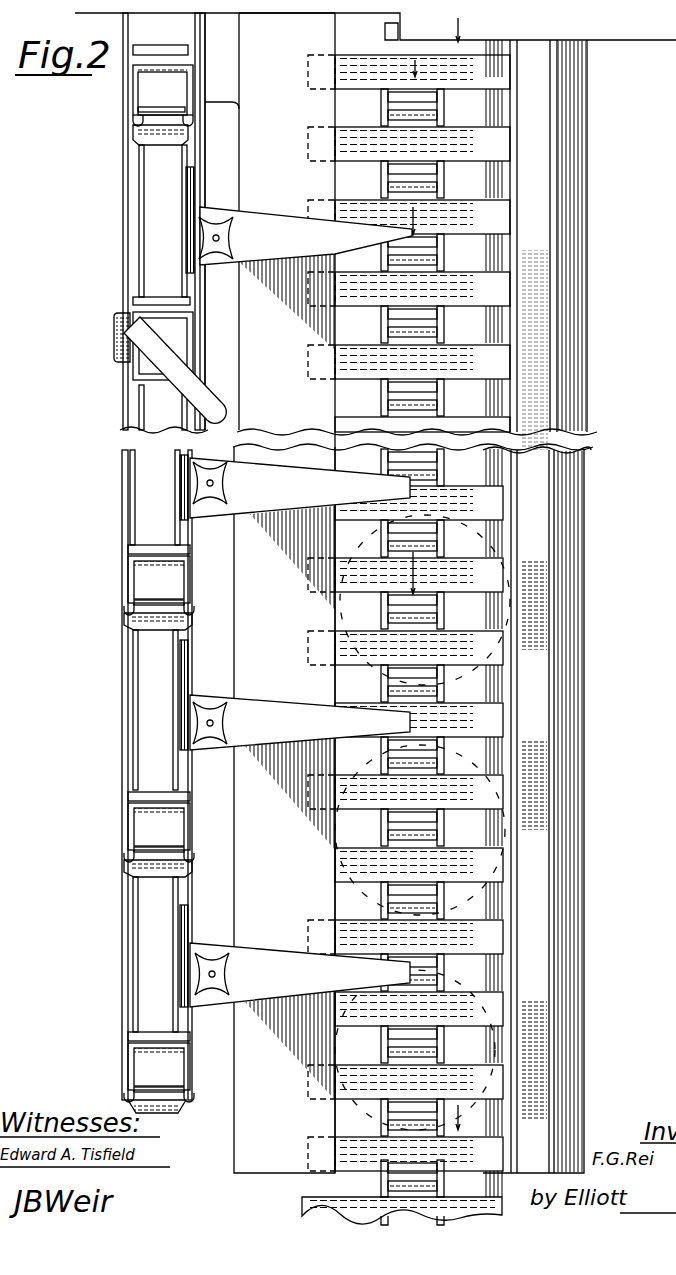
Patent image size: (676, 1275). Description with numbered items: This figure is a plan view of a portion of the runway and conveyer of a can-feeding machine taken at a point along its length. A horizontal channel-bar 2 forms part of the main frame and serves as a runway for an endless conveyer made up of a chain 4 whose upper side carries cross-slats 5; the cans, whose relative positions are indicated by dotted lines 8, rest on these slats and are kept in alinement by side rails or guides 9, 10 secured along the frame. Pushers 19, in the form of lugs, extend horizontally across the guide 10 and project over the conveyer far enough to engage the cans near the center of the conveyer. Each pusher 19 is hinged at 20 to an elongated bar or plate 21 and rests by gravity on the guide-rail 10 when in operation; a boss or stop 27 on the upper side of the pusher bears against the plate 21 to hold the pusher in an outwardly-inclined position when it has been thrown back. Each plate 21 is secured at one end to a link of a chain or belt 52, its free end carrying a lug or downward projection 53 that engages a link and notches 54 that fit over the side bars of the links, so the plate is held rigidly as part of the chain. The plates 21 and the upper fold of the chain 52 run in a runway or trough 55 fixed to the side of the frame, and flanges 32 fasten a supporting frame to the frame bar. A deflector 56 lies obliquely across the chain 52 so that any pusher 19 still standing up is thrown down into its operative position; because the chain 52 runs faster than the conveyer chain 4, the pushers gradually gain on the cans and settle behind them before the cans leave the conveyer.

The channel-bar 2 is at (570, 123).
The chain 4 is at (384, 108).
The cross-slats 5 is at (456, 130).
The cans 8 is at (512, 613).
The side rail or guide 9 is at (530, 77).
The side rail or guide 10 is at (246, 374).
The pushers 19 is at (256, 216).
The hinge 20 is at (196, 182).
The bar or plate 21 is at (155, 160).
The boss or stop 27 is at (214, 216).
The flanges 32 is at (232, 88).
The chain or belt 52 is at (140, 90).
The lug or downward projection 53 is at (140, 118).
The notches 54 is at (138, 130).
The runway or trough 55 is at (205, 60).
The deflector 56 is at (132, 362).